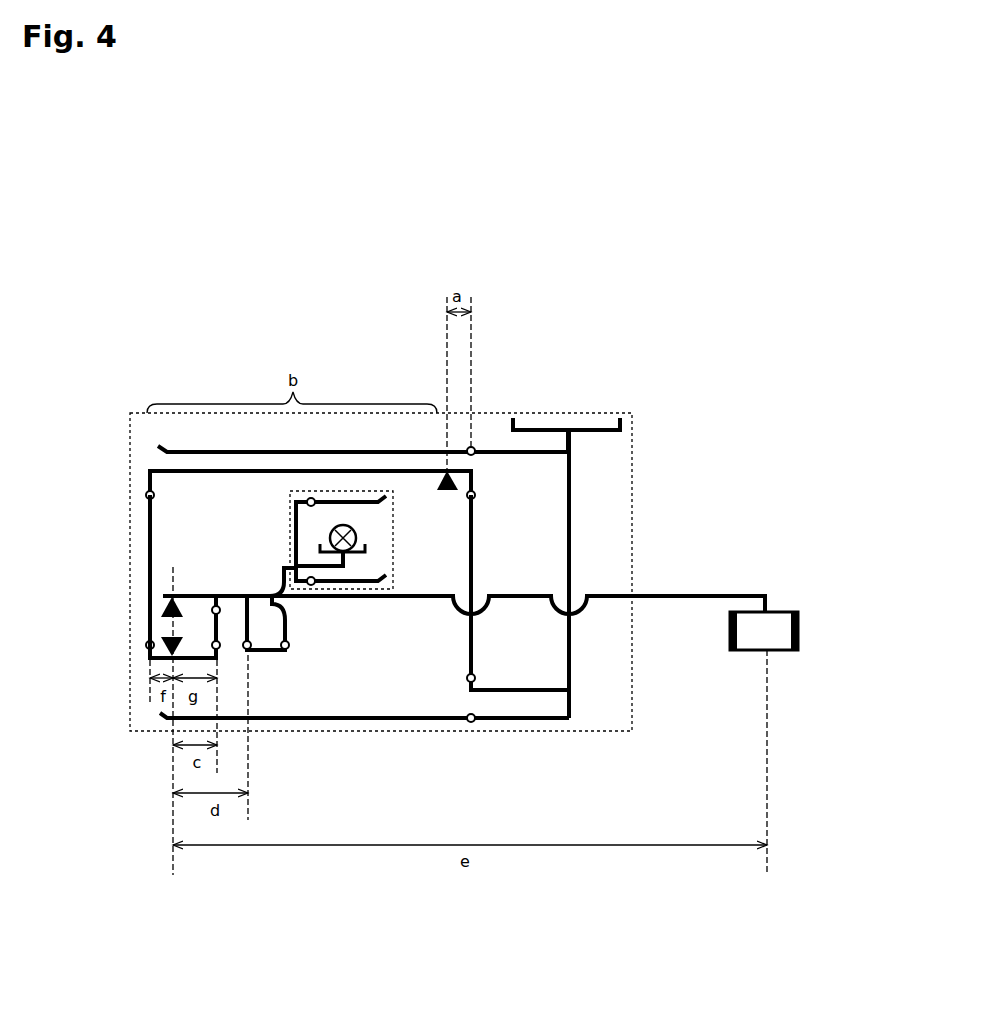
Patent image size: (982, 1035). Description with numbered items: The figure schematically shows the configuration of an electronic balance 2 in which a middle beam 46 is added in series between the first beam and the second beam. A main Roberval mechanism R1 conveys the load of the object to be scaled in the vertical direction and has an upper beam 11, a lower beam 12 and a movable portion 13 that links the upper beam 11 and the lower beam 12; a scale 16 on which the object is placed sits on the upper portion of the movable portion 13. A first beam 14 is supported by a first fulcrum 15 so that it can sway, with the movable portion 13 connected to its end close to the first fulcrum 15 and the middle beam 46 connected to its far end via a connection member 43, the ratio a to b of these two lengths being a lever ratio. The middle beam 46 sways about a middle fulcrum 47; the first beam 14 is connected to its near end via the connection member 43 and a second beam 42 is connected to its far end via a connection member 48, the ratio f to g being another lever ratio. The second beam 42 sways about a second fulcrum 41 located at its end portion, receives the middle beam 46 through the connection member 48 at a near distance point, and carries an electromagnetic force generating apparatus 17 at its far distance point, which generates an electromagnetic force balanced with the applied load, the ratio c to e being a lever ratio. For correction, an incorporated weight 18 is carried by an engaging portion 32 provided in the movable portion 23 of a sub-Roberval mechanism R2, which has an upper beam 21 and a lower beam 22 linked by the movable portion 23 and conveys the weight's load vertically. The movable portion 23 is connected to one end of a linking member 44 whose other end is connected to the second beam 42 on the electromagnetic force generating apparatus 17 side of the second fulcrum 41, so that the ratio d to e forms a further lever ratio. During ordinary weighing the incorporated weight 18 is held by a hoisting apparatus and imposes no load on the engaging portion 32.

The electronic balance 2 is at (432, 208).
The upper beam 11 is at (383, 447).
The lower beam 12 is at (540, 722).
The movable portion 13 is at (570, 470).
The first beam 14 is at (183, 452).
The first fulcrum 15 is at (458, 478).
The scale 16 is at (590, 418).
The electromagnetic force generating apparatus 17 is at (777, 628).
The incorporated weight 18 is at (340, 524).
The upper beam 21 is at (312, 500).
The lower beam 22 is at (365, 583).
The movable portion 23 is at (292, 545).
The engaging portion 32 is at (296, 553).
The second fulcrum 41 is at (163, 608).
The second beam 42 is at (683, 597).
The connection member 43 is at (148, 471).
The linking member 44 is at (283, 652).
The middle beam 46 is at (167, 660).
The middle fulcrum 47 is at (153, 655).
The connection member 48 is at (220, 630).
The main Roberval mechanism R1 is at (632, 535).
The sub-Roberval mechanism R2 is at (393, 548).